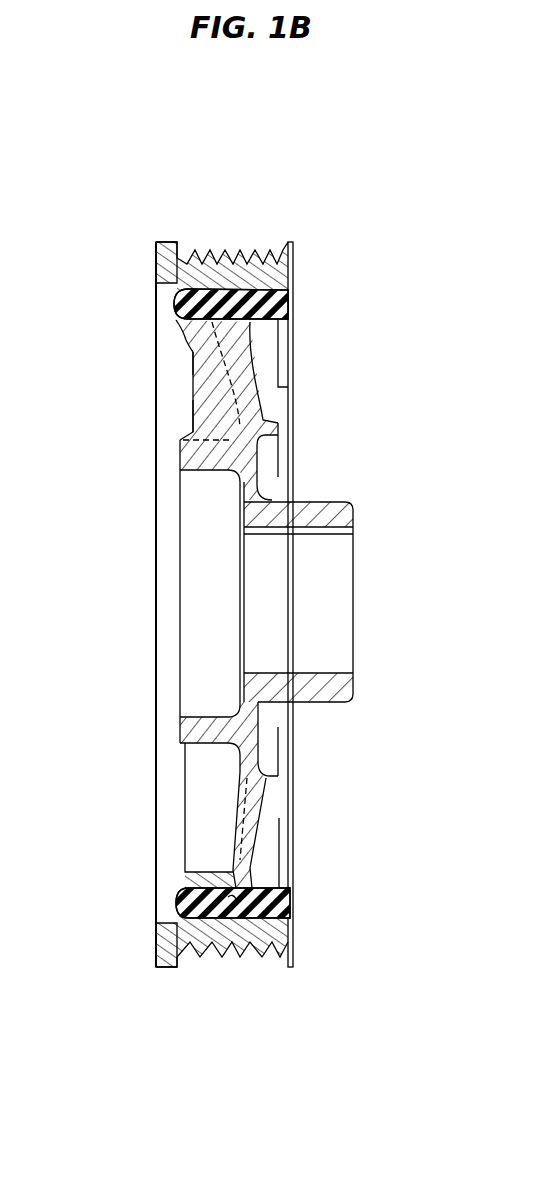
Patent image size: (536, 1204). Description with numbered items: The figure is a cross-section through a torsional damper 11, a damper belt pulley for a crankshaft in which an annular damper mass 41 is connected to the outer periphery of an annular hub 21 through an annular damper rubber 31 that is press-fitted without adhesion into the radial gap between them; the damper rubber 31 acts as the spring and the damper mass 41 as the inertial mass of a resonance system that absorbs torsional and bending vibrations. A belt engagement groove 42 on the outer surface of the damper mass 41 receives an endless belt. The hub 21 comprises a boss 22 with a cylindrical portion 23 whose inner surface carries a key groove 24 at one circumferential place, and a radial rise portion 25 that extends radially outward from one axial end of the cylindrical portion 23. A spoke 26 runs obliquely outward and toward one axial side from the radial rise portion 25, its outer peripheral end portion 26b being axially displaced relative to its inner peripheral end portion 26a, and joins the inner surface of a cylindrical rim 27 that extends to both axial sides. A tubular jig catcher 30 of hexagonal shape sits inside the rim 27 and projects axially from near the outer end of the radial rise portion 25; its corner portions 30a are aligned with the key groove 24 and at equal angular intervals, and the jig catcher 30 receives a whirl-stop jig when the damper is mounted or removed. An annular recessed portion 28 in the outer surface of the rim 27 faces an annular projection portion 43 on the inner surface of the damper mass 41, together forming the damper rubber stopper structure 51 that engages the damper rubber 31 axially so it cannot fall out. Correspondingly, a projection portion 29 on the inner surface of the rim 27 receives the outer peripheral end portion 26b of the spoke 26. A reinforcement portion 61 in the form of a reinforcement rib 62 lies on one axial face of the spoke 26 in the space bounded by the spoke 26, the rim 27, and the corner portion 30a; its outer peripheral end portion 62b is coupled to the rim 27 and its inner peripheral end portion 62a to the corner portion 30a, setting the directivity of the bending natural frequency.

The torsional damper 11 is at (156, 243).
The hub 21 is at (345, 517).
The boss 22 is at (257, 534).
The cylindrical portion 23 is at (307, 528).
The key groove 24 is at (280, 534).
The radial rise portion 25 is at (282, 458).
The spoke 26 is at (262, 388).
The inner peripheral end portion 26a is at (265, 795).
The outer peripheral end portion 26b is at (260, 858).
The rim 27 is at (283, 325).
The annular recessed portion 28 is at (212, 903).
The projection portion 29 is at (232, 857).
The jig catcher 30 is at (145, 591).
The corner portion 30a is at (182, 462).
The damper rubber 31 is at (290, 297).
The damper mass 41 is at (293, 265).
The belt engagement groove 42 is at (253, 960).
The annular projection portion 43 is at (233, 898).
The damper rubber stopper structure 51 is at (204, 923).
The reinforcement portion 61 is at (155, 338).
The reinforcement rib 62 is at (193, 383).
The inner peripheral end portion 62a is at (193, 425).
The outer peripheral end portion 62b is at (181, 344).